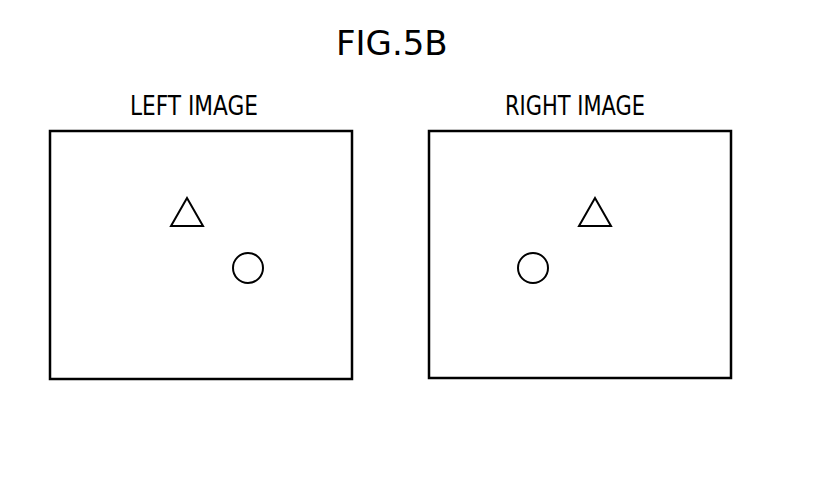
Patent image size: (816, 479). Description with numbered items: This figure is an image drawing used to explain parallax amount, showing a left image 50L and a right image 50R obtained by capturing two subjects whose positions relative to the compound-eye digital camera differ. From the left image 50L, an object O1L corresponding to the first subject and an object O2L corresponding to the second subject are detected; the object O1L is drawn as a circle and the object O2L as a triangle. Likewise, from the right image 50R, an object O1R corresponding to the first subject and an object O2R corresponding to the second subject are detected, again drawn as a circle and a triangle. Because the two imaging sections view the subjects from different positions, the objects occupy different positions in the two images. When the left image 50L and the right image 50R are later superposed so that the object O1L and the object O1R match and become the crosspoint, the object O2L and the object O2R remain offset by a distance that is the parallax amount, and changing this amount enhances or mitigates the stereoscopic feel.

The left image 50L is at (100, 368).
The right image 50R is at (690, 368).
The object O1L is at (248, 274).
The object O2L is at (185, 214).
The object O1R is at (530, 274).
The object O2R is at (594, 214).